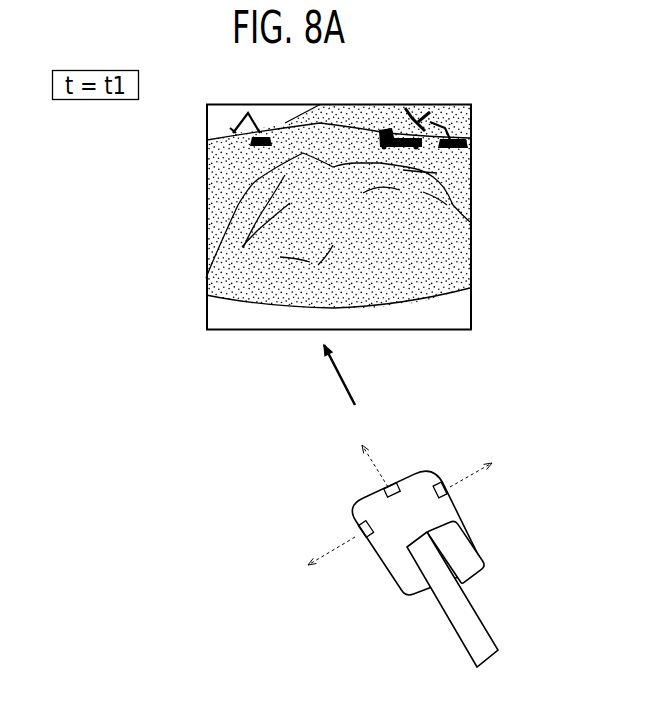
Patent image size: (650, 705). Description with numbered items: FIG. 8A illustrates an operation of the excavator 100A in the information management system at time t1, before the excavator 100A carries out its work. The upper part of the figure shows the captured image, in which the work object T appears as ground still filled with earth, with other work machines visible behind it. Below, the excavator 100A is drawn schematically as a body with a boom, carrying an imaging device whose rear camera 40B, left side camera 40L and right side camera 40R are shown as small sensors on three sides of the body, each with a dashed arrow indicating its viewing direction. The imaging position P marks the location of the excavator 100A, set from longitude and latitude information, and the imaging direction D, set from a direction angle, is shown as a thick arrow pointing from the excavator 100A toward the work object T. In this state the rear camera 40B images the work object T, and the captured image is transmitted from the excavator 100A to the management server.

The work object T is at (408, 168).
The imaging direction D is at (343, 375).
The excavator 100A is at (411, 526).
The rear camera 40B is at (383, 493).
The left side camera 40L is at (444, 490).
The right side camera 40R is at (362, 537).
The imaging position P is at (390, 603).